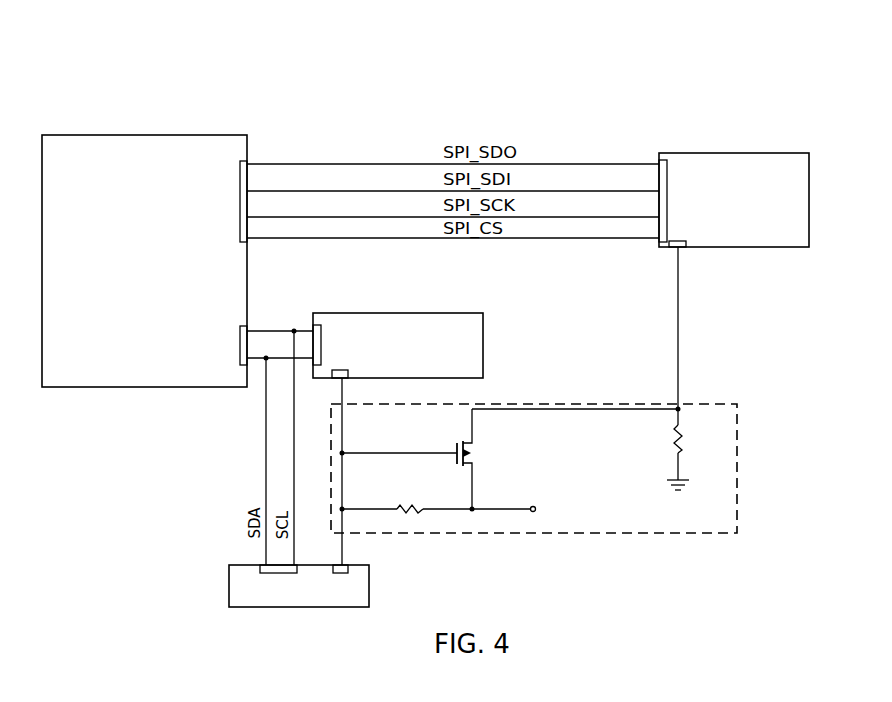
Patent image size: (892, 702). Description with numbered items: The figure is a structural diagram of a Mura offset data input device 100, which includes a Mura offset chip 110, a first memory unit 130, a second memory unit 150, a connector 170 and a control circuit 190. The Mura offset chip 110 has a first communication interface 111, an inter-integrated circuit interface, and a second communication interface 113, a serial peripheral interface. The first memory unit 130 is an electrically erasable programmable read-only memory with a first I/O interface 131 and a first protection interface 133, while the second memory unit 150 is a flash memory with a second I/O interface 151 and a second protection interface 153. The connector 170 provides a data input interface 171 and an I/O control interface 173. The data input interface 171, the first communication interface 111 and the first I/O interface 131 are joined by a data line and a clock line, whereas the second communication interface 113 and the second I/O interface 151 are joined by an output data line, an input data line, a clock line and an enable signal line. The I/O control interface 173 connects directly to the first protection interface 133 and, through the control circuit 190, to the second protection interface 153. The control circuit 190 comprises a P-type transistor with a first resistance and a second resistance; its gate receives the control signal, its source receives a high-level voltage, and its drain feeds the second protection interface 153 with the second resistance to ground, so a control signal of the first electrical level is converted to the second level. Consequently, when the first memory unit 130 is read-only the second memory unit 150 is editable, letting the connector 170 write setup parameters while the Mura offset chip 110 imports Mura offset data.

The Mura offset data input device 100 is at (396, 62).
The Mura offset chip 110 is at (152, 135).
The first communication interface 111 is at (247, 334).
The second communication interface 113 is at (245, 168).
The first memory unit 130 is at (417, 313).
The first I/O interface 131 is at (320, 343).
The first protection interface 133 is at (345, 378).
The second memory unit 150 is at (737, 153).
The second I/O interface 151 is at (667, 185).
The second protection interface 153 is at (680, 250).
The connector 170 is at (369, 590).
The data input interface 171 is at (267, 565).
The I/O control interface 173 is at (343, 565).
The control circuit 190 is at (715, 404).